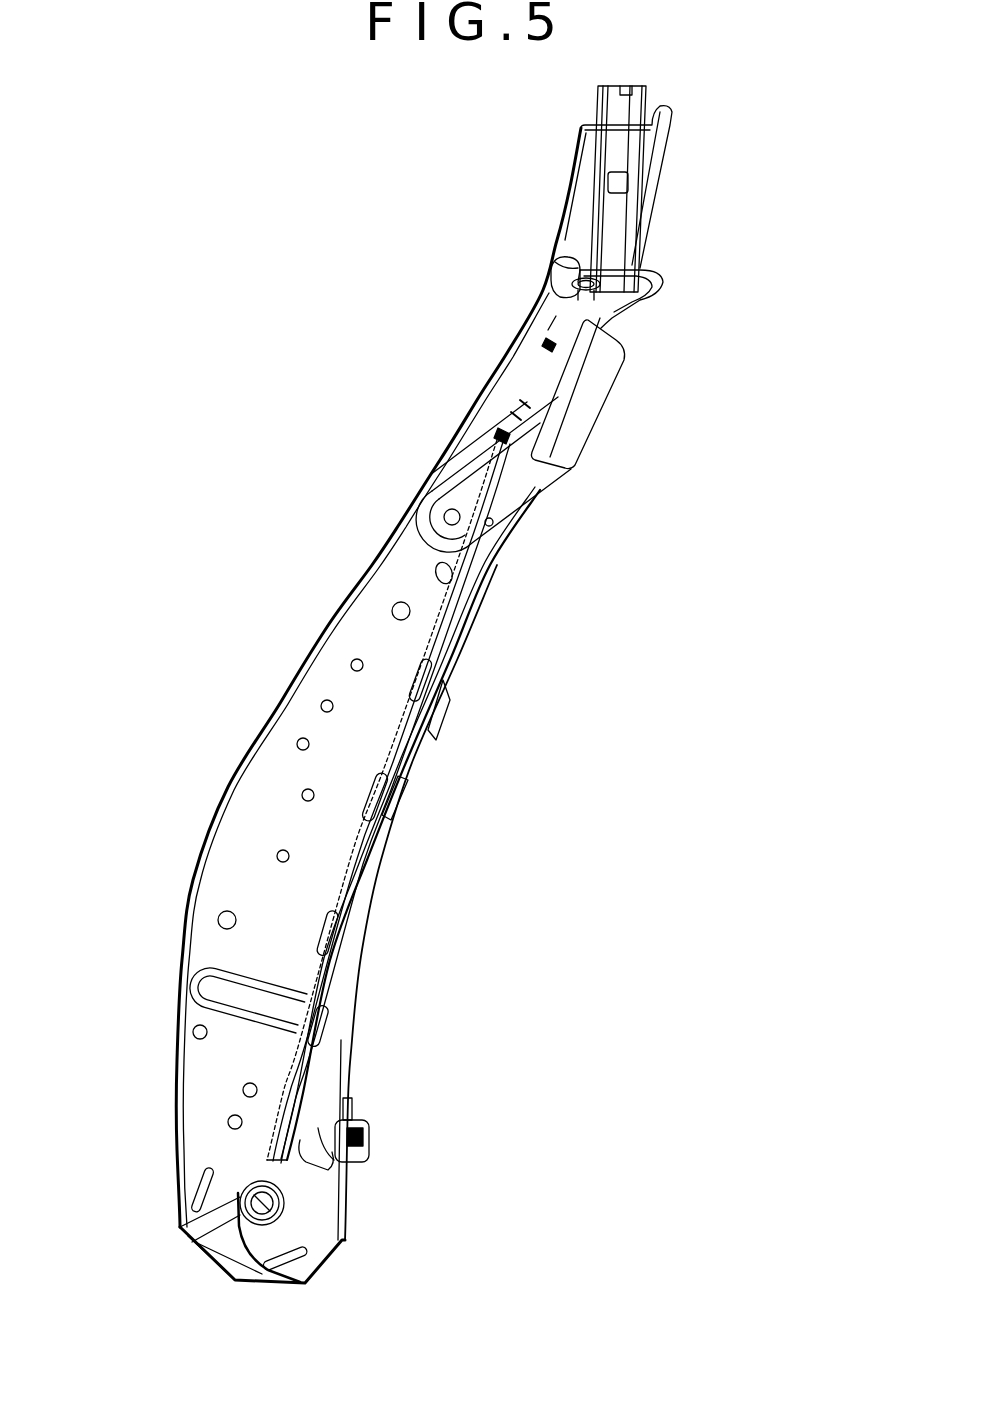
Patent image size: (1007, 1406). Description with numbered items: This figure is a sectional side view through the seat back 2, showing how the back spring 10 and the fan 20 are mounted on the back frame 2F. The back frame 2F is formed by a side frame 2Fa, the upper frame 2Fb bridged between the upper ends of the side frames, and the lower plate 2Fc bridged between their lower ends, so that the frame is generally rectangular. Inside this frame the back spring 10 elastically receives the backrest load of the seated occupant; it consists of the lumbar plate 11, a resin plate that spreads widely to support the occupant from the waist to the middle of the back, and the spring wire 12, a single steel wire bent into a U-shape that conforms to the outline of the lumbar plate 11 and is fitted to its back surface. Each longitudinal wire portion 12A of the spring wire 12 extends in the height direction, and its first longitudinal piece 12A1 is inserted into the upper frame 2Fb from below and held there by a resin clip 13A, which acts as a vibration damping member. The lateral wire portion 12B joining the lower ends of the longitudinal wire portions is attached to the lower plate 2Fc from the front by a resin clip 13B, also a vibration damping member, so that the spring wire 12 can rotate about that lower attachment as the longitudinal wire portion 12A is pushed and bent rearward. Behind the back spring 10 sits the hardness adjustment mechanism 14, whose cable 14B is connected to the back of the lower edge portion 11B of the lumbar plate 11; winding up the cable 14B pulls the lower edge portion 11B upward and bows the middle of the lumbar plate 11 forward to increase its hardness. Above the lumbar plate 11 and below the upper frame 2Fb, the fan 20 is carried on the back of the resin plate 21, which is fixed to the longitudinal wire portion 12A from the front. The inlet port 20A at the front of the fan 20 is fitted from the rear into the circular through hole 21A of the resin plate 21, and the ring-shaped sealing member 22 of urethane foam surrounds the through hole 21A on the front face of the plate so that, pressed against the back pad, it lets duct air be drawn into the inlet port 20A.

The seat back 2 is at (253, 246).
The back frame 2F is at (514, 337).
The side frame 2Fa is at (398, 573).
The upper frame 2Fb is at (574, 218).
The lower plate 2Fc is at (350, 1207).
The back spring 10 is at (399, 655).
The lumbar plate 11 is at (344, 840).
The lower edge portion 11B is at (300, 1119).
The spring wire 12 is at (470, 590).
The longitudinal wire portion 12A is at (704, 305).
The first longitudinal piece 12A1 is at (620, 300).
The lateral wire portion 12B is at (368, 1143).
The clip 13A is at (559, 277).
The clip 13B is at (351, 1118).
The hardness adjustment mechanism 14 is at (419, 737).
The cable 14B is at (395, 790).
The fan 20 is at (613, 403).
The inlet port 20A is at (528, 408).
The resin plate 21 is at (508, 478).
The through hole 21A is at (527, 410).
The sealing member 22 is at (553, 342).